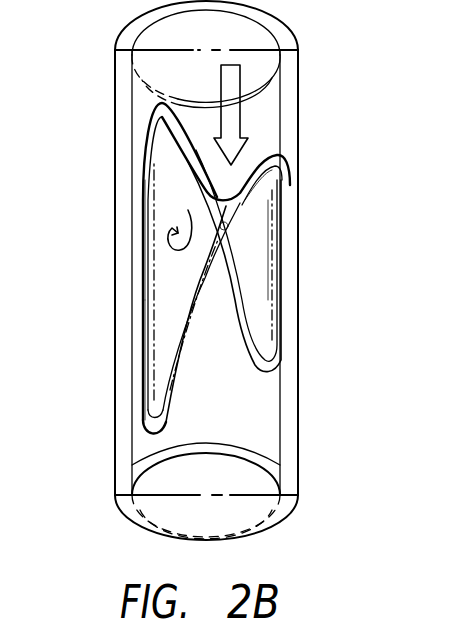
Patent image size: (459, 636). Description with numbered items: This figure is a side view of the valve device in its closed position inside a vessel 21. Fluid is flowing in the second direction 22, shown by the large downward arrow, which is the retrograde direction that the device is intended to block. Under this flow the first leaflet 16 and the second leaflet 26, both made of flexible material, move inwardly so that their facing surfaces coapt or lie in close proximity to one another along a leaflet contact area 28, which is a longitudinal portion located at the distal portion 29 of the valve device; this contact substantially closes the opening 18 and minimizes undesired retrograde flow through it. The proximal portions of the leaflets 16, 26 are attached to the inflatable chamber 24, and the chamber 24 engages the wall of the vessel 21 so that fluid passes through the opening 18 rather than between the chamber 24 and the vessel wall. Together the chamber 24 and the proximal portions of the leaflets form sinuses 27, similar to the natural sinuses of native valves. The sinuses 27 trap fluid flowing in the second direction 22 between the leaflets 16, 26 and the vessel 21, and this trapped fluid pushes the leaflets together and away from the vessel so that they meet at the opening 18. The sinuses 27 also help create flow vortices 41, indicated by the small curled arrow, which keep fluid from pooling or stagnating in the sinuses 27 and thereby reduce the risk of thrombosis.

The first leaflet 16 is at (258, 300).
The opening 18 is at (270, 151).
The vessel 21 is at (291, 205).
The second direction 22 is at (242, 120).
The inflatable chamber 24 is at (148, 140).
The second leaflet 26 is at (160, 328).
The sinuses 27 is at (163, 181).
The leaflet contact area 28 is at (222, 226).
The distal portion 29 is at (270, 164).
The flow vortices 41 is at (168, 240).